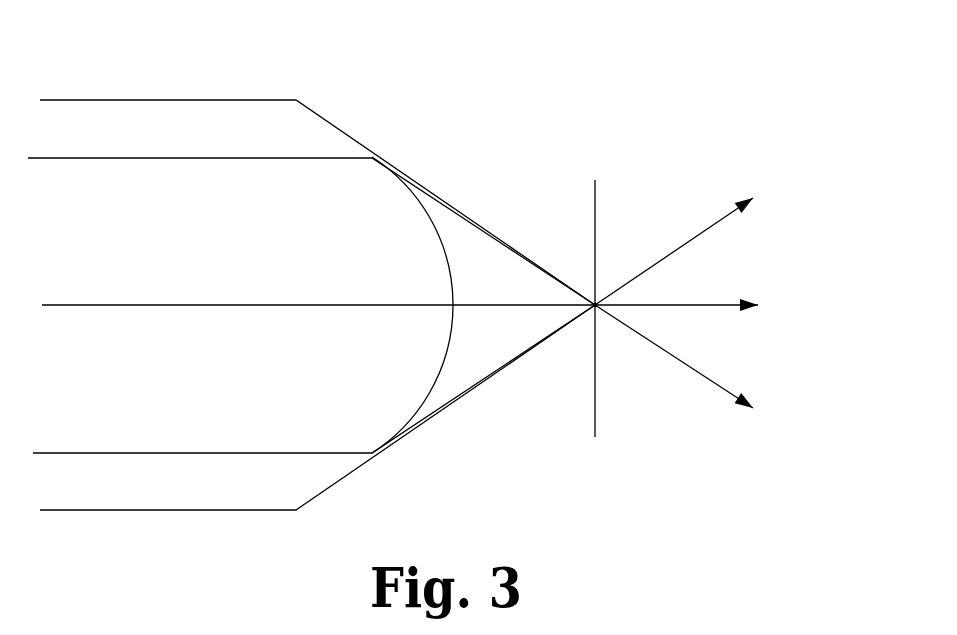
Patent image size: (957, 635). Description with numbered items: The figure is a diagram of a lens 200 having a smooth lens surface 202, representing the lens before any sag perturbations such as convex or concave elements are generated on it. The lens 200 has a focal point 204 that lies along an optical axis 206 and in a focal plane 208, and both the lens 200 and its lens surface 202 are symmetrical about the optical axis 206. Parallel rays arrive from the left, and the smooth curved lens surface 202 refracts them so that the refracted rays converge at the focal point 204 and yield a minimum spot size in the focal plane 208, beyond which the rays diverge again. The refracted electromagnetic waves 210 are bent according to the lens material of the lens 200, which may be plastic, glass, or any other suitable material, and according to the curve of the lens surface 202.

The lens 200 is at (342, 62).
The lens surface 202 is at (351, 138).
The focal point 204 is at (599, 296).
The optical axis 206 is at (250, 305).
The focal plane 208 is at (597, 410).
The electromagnetic waves 210 is at (697, 367).